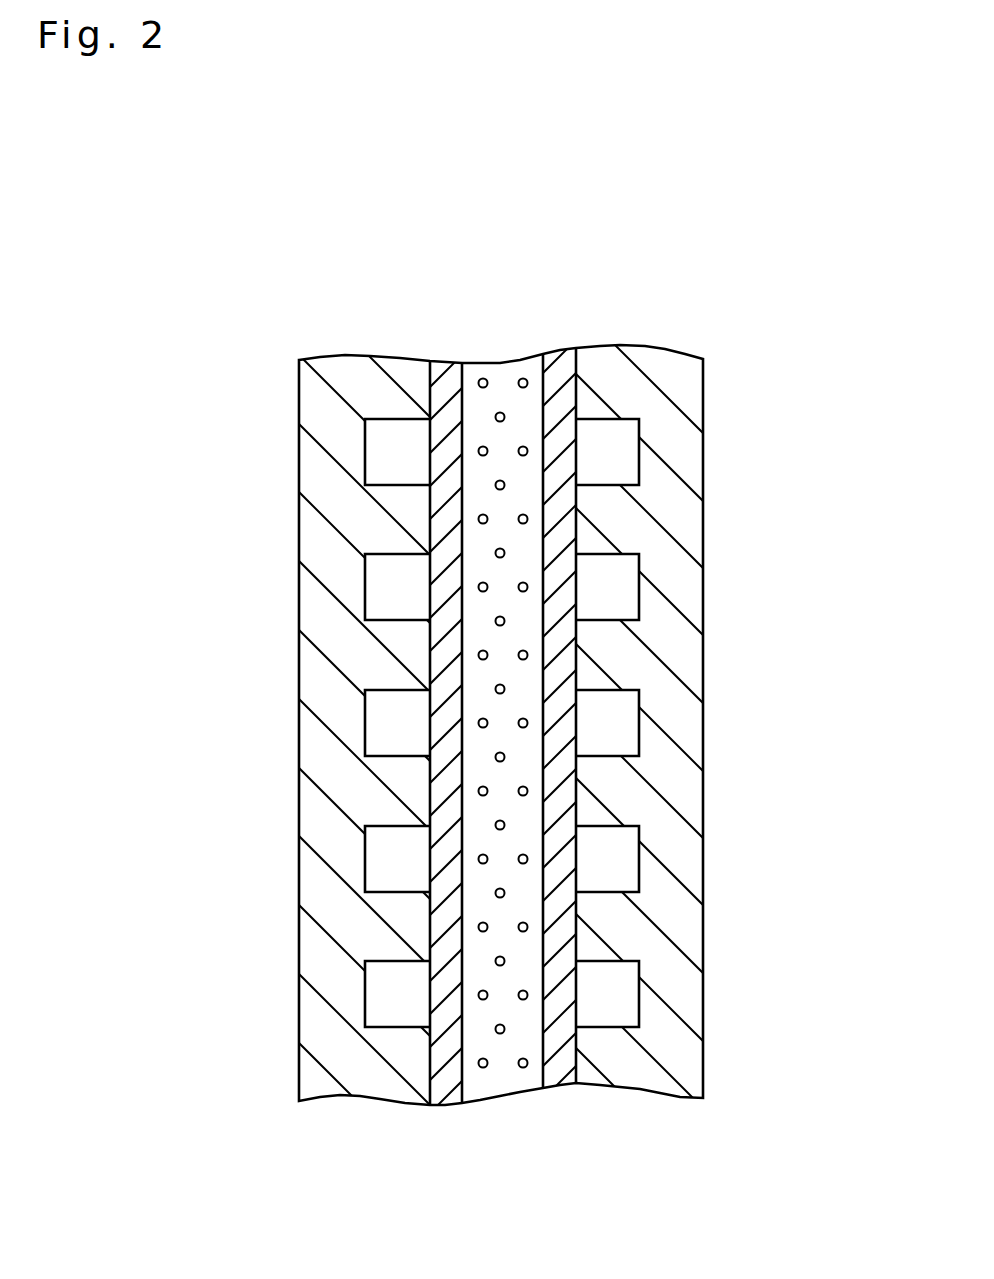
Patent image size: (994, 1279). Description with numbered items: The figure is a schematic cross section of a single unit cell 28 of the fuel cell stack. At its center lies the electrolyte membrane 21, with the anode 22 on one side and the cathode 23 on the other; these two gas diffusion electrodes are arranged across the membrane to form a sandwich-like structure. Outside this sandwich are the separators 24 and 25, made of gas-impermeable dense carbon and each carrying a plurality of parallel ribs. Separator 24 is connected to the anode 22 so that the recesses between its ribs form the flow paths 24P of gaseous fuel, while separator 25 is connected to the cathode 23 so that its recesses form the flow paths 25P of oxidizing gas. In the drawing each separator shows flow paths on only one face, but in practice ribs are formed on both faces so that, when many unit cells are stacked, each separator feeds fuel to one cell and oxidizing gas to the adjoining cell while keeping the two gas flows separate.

The unit cell 28 is at (798, 262).
The electrolyte membrane 21 is at (500, 362).
The anode 22 is at (562, 348).
The cathode 23 is at (447, 362).
The separator 24 is at (653, 345).
The separator 25 is at (358, 357).
The flow paths of gaseous fuel 24P is at (622, 581).
The flow paths of oxidizing gas 25P is at (380, 583).